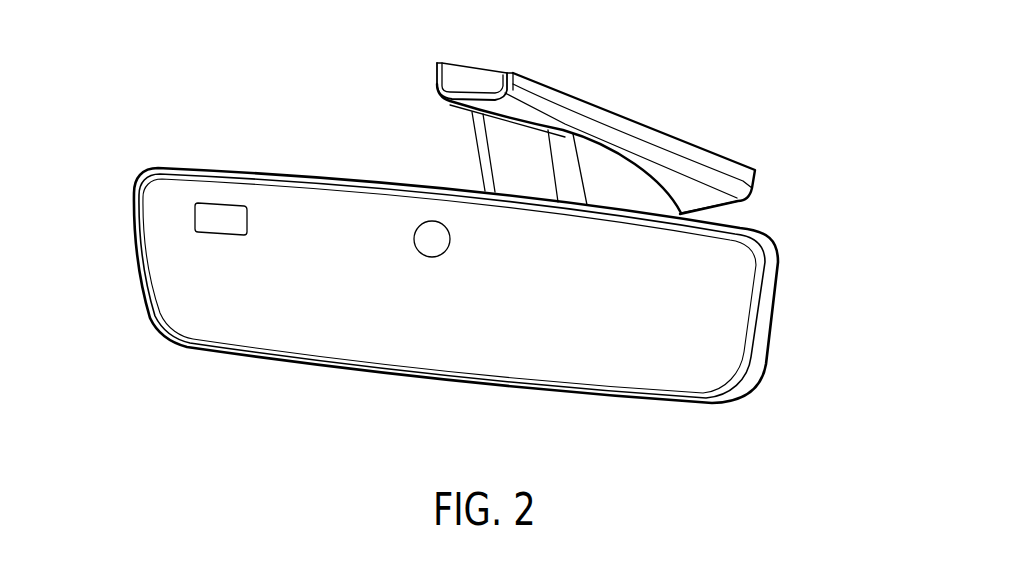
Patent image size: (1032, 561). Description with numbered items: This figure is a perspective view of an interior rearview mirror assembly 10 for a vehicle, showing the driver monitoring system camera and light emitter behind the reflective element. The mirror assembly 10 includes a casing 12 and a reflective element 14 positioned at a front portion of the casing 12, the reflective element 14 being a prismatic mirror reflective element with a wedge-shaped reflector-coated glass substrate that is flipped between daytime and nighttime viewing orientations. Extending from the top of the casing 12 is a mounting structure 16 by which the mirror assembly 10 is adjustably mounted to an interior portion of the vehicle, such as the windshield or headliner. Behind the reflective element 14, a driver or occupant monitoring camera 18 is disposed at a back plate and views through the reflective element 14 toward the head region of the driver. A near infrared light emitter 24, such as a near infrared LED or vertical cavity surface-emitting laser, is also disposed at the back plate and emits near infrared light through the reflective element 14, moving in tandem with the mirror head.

The interior rearview mirror assembly 10 is at (790, 99).
The casing 12 is at (750, 380).
The reflective element 14 is at (380, 348).
The mounting structure 16 is at (570, 106).
The driver/occupant monitoring camera 18 is at (417, 246).
The near infrared light emitter 24 is at (223, 222).